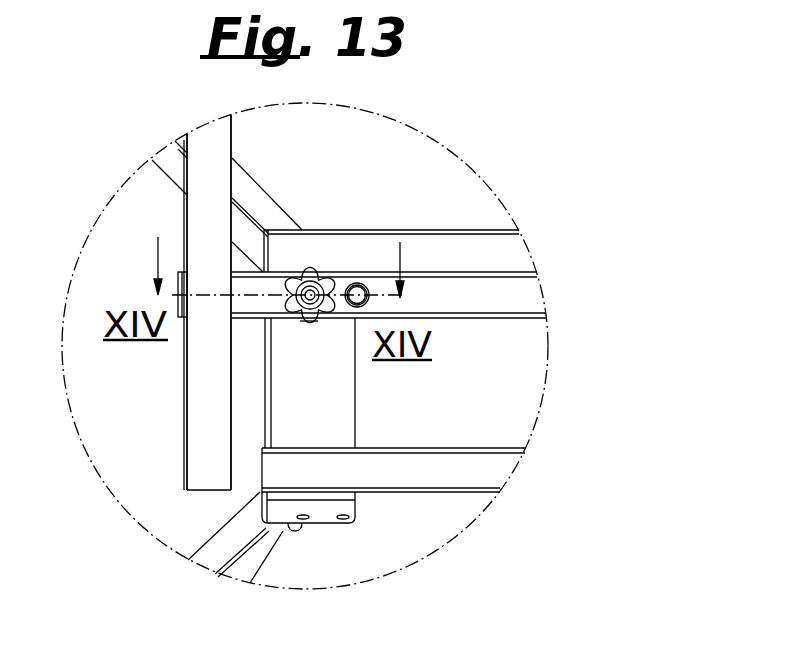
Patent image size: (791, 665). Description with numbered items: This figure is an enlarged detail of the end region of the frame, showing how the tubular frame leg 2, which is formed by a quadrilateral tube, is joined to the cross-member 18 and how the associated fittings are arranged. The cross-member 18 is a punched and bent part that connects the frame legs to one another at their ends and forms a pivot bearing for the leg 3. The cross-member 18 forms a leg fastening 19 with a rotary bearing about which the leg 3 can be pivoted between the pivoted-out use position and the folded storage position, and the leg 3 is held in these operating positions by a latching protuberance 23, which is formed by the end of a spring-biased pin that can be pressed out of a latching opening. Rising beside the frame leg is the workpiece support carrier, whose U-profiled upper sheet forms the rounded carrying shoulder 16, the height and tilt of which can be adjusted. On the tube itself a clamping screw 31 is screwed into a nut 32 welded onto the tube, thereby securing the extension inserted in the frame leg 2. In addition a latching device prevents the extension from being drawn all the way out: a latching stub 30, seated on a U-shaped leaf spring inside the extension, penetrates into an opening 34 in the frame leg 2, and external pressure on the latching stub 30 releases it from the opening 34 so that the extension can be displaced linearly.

The frame leg 2 is at (430, 295).
The leg 3 is at (170, 160).
The carrying shoulder 16 is at (214, 146).
The cross-member 18 is at (332, 438).
The leg fastening 19 is at (322, 520).
The latching protuberance 23 is at (296, 530).
The latching stub 30 is at (355, 283).
The clamping screw 31 is at (312, 276).
The nut 32 is at (309, 322).
The opening 34 is at (364, 287).